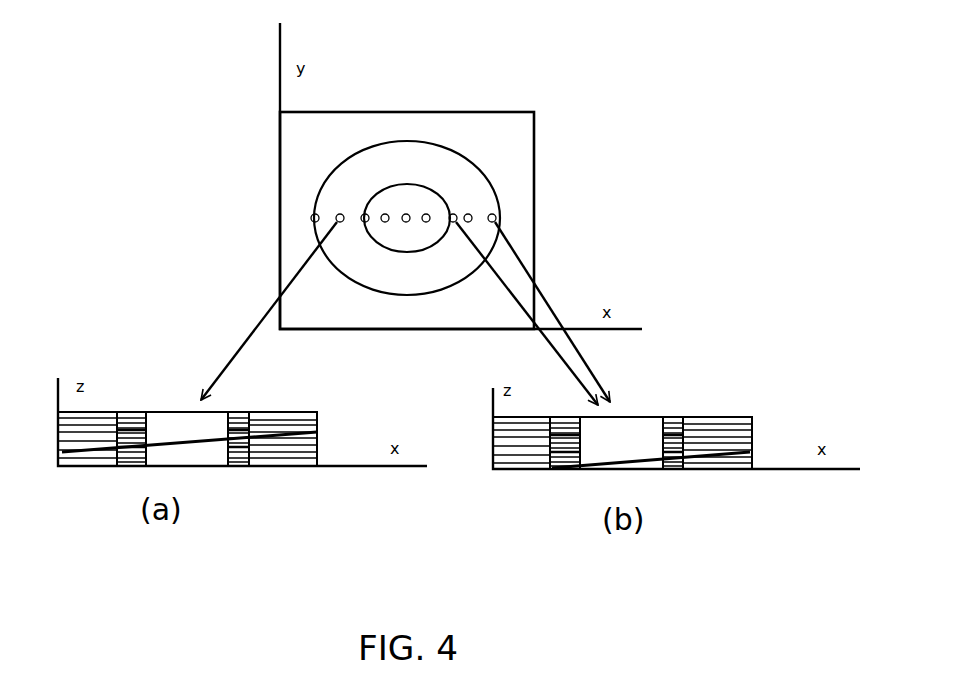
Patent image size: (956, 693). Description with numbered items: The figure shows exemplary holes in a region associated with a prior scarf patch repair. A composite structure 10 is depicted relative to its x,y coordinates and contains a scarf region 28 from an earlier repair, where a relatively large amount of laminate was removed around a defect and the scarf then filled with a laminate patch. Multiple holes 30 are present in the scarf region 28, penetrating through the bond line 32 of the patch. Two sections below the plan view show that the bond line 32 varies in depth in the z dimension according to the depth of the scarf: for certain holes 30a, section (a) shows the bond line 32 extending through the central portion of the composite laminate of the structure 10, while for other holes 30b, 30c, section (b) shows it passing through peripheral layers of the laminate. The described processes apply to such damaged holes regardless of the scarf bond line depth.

The composite structure 10 is at (483, 130).
The scarf region 28 is at (405, 278).
The holes 30 is at (407, 206).
The holes 30a is at (336, 214).
The holes 30b is at (452, 230).
The holes 30c is at (497, 218).
The bond line 32 is at (277, 437).